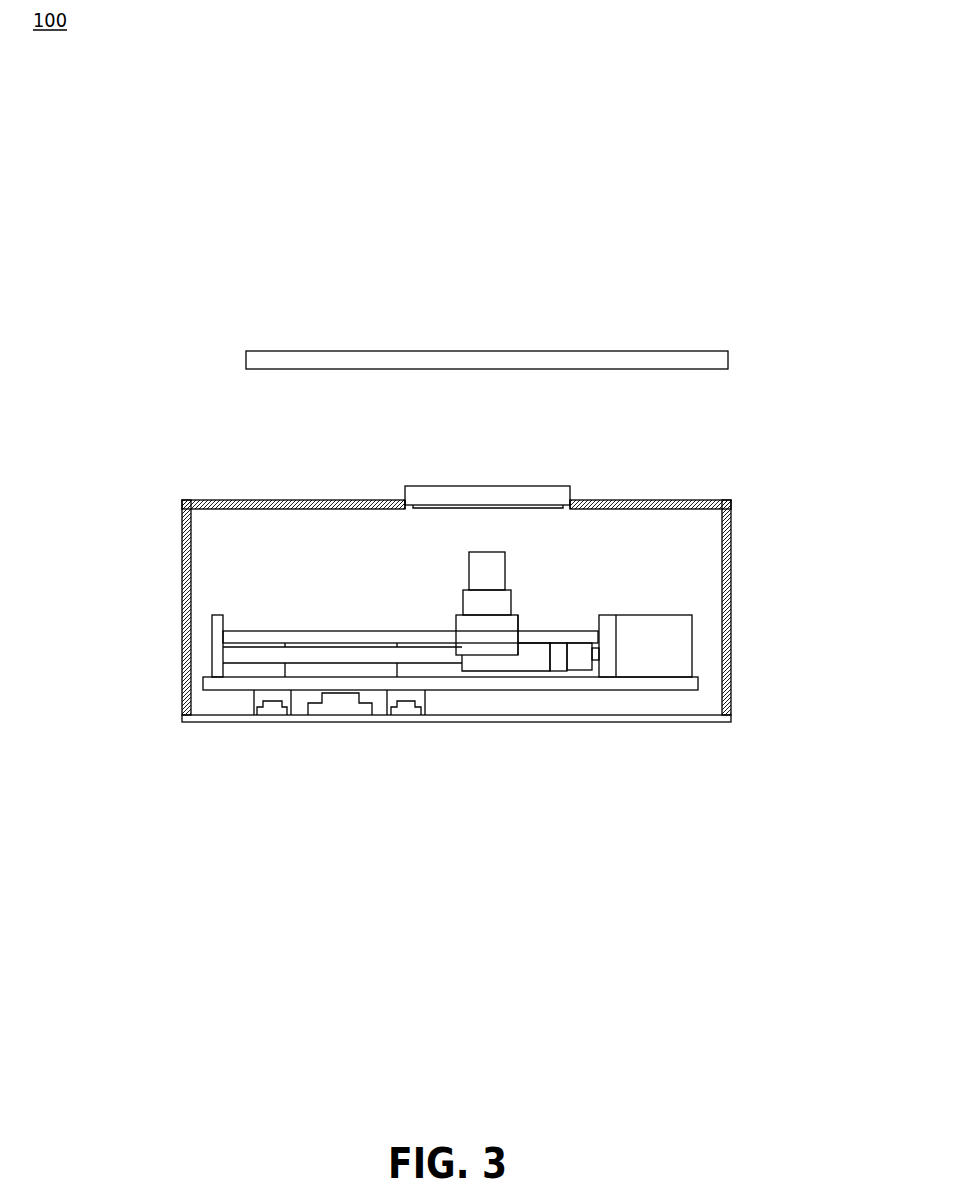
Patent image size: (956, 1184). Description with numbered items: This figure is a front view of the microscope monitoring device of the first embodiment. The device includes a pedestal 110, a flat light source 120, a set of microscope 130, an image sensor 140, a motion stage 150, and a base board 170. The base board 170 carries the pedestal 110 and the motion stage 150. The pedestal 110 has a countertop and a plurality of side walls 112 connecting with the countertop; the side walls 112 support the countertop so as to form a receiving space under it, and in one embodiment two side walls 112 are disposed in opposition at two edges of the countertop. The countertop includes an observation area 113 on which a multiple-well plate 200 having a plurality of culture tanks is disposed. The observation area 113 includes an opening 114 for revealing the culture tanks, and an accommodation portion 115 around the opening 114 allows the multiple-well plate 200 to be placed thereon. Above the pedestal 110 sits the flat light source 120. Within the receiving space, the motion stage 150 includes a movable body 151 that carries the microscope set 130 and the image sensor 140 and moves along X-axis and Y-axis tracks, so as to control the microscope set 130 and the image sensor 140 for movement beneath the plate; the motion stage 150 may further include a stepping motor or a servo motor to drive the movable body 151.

The pedestal 110 is at (445, 603).
The side wall 112 is at (182, 607).
The observation area 113 is at (532, 506).
The opening 114 is at (433, 508).
The accommodation portion 115 is at (403, 498).
The flat light source 120 is at (598, 350).
The microscope set 130 is at (468, 560).
The image sensor 140 is at (463, 607).
The motion stage 150 is at (702, 652).
The movable body 151 is at (519, 620).
The base board 170 is at (582, 722).
The multiple-well plate 200 is at (500, 487).